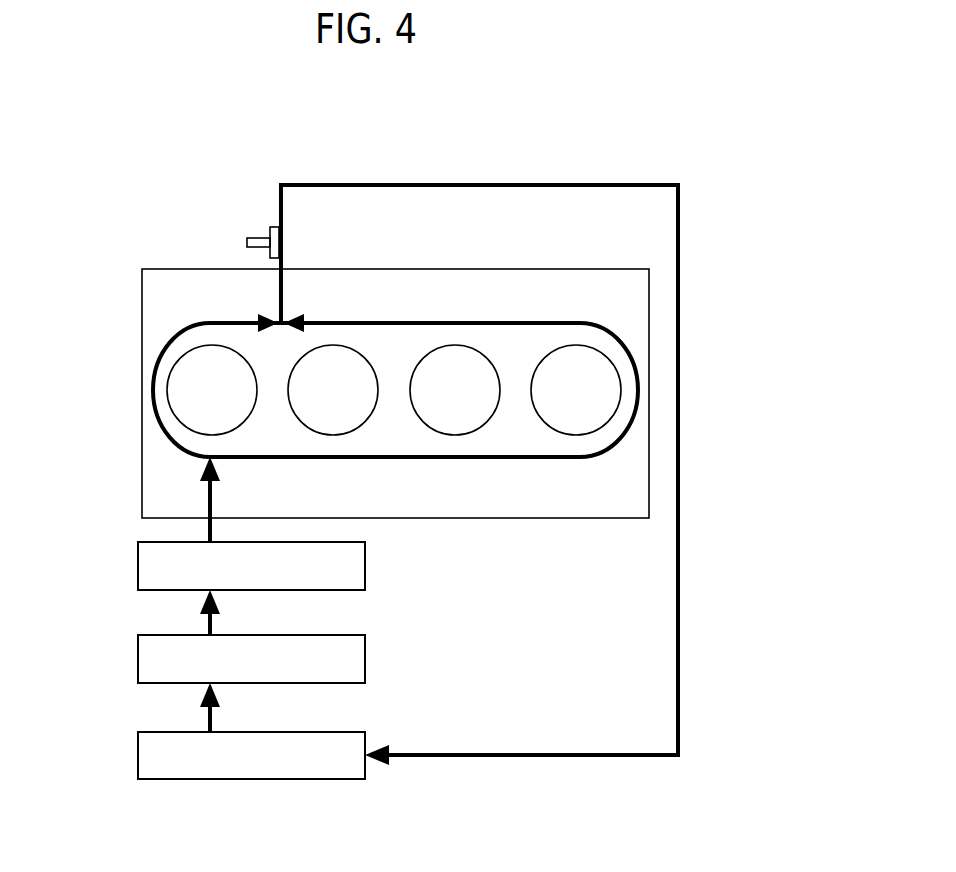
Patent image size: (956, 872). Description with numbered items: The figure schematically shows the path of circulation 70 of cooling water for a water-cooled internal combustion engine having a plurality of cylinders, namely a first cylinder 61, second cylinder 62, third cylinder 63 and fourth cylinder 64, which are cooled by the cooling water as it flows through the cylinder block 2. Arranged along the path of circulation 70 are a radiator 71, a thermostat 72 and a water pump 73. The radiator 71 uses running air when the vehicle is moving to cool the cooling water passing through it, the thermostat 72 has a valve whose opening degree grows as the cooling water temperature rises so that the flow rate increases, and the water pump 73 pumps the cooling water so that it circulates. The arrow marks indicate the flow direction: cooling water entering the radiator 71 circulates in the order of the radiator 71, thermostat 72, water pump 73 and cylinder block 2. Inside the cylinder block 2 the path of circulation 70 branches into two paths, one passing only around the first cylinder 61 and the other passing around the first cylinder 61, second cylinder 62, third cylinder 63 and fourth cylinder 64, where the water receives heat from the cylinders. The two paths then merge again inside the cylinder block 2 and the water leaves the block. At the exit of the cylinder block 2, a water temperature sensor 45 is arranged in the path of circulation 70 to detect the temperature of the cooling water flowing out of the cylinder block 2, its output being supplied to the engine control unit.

The cylinder block 2 is at (142, 428).
The water temperature sensor 45 is at (270, 234).
The first cylinder 61 is at (178, 364).
The second cylinder 62 is at (335, 436).
The third cylinder 63 is at (455, 436).
The fourth cylinder 64 is at (576, 436).
The path of circulation 70 is at (597, 757).
The radiator 71 is at (138, 757).
The thermostat 72 is at (138, 663).
The water pump 73 is at (138, 570).